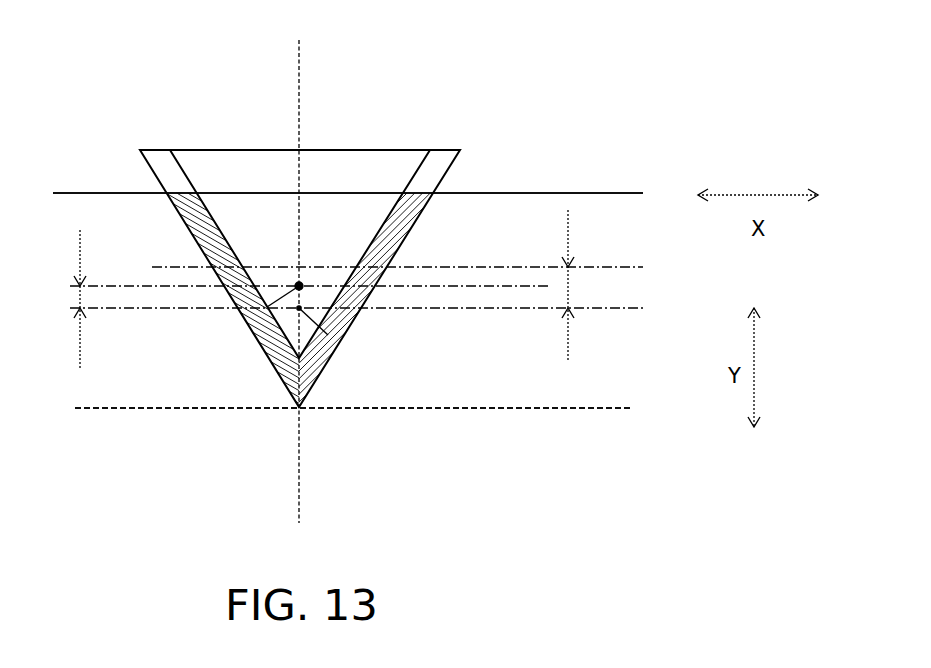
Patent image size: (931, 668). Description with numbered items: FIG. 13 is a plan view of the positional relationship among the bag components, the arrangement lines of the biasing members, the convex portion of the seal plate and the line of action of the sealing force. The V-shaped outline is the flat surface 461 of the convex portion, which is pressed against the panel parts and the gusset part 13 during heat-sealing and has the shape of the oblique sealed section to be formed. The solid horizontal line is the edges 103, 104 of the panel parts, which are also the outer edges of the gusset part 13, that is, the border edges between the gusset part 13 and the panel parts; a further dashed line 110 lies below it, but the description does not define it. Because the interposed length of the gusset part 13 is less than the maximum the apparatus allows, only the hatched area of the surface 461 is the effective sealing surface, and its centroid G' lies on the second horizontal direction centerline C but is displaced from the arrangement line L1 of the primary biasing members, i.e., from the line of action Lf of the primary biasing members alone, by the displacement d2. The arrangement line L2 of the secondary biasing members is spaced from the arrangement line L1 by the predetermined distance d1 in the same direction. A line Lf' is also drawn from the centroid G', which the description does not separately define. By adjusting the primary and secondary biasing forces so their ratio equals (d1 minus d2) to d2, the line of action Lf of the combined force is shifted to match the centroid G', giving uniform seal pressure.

The edge of the panel part 103 is at (78, 190).
The edge of the panel part 104 is at (348, 127).
The surface 461 is at (440, 167).
The substrate surface 110 is at (110, 410).
The gusset part 13 is at (523, 392).
The arrangement line L1 is at (610, 309).
The arrangement line L2 is at (615, 263).
The second horizontal direction centerline C is at (295, 75).
The centroid G' is at (309, 198).
The line of action Lf is at (348, 429).
The line Lf' is at (245, 418).
The predetermined distance d1 is at (584, 286).
The displacement d2 is at (63, 299).